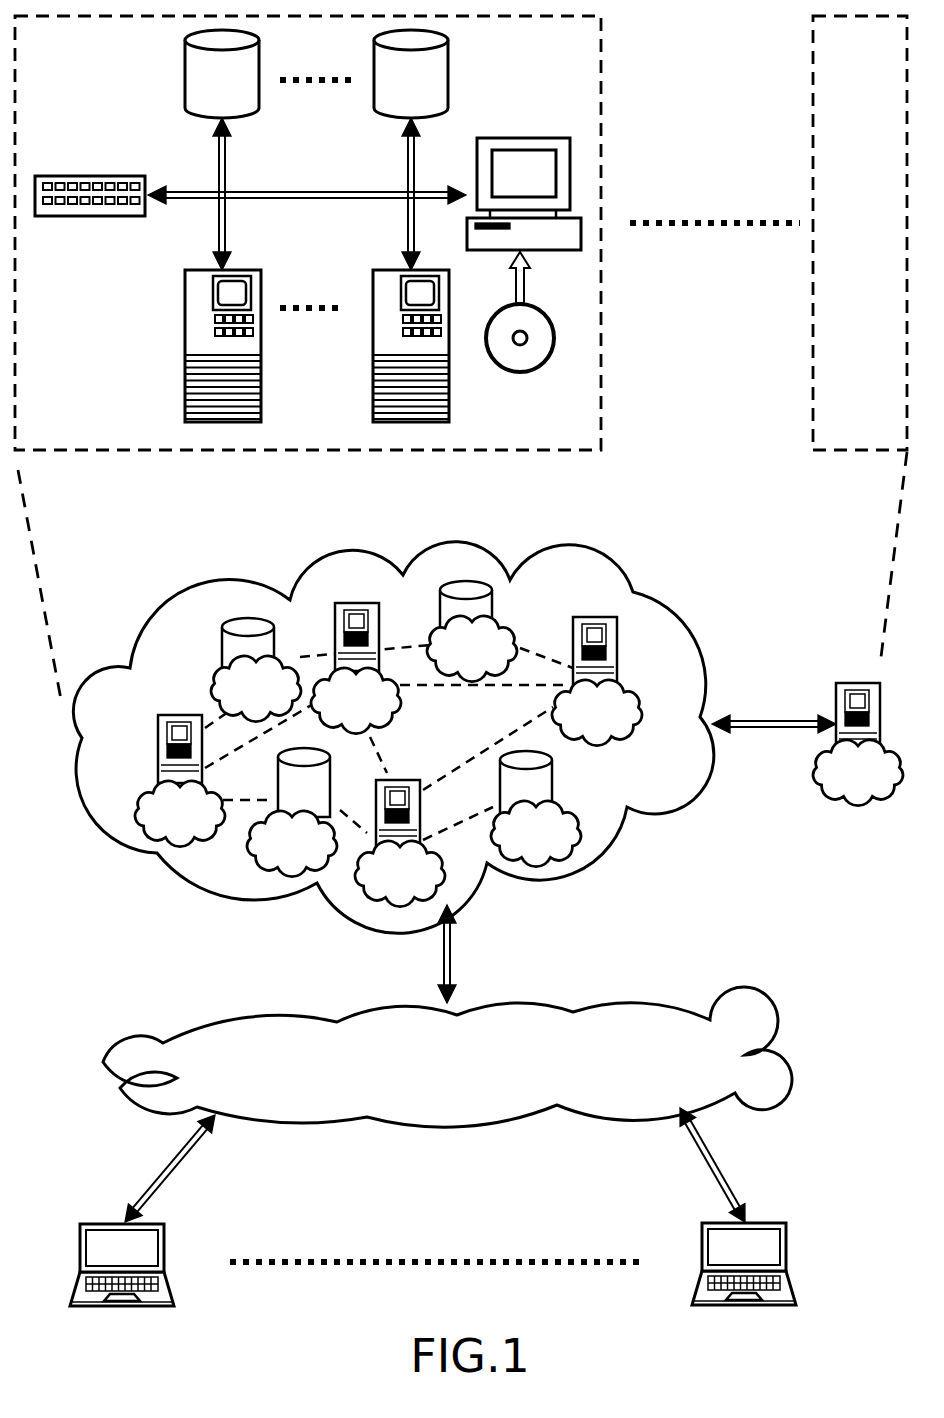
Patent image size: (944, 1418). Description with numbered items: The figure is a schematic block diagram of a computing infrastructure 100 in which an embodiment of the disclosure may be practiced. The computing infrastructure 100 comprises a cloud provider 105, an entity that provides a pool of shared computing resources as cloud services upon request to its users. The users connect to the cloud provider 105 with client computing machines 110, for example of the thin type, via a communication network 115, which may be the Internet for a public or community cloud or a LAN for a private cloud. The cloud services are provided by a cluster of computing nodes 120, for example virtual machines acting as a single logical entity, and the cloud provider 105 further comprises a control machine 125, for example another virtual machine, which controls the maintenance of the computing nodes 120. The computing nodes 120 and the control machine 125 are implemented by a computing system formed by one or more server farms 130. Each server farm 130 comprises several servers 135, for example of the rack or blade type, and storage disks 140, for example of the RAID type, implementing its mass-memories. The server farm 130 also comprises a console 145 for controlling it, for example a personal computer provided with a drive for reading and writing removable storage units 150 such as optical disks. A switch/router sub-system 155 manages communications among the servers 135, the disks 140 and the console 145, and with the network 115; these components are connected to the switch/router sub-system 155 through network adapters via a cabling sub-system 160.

The computing infrastructure 100 is at (68, 956).
The cloud provider 105 is at (398, 730).
The client computing machine 110 is at (433, 1207).
The network 115 is at (447, 1016).
The computing node 120 is at (360, 740).
The control machine 125 is at (807, 717).
The server farm 130 is at (461, 360).
The server 135 is at (268, 352).
The storage disk 140 is at (268, 87).
The console 145 is at (525, 165).
The removable storage unit 150 is at (541, 339).
The switch/router sub-system 155 is at (94, 226).
The cabling sub-system 160 is at (307, 194).